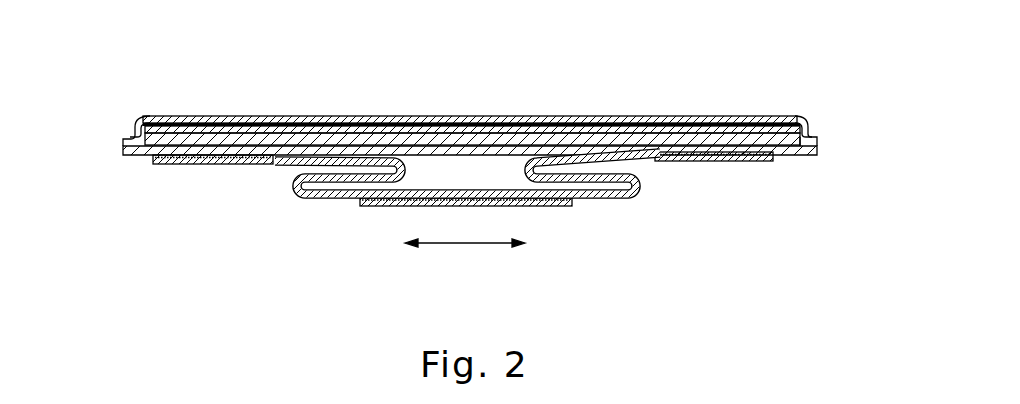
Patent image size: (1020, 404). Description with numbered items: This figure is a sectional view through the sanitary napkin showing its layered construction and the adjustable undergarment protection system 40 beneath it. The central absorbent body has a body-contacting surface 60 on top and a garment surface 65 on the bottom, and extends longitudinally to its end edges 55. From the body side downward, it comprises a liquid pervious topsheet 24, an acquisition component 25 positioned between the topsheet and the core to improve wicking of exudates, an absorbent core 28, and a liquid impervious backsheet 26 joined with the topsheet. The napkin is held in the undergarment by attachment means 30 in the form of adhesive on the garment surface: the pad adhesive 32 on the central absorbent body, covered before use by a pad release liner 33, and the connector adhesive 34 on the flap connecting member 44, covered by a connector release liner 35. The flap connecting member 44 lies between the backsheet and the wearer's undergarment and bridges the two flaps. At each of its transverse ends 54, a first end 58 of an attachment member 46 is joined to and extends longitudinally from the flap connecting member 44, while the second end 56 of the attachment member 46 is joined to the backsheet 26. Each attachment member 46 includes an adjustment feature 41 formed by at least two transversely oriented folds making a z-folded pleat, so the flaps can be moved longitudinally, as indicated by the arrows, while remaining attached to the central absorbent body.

The topsheet 24 is at (655, 114).
The acquisition component 25 is at (767, 116).
The backsheet 26 is at (790, 154).
The absorbent core 28 is at (808, 130).
The attachment means 30 is at (439, 225).
The pad adhesive 32 is at (145, 156).
The pad release liner 33 is at (215, 199).
The connector adhesive 34 is at (535, 251).
The connector release liner 35 is at (550, 208).
The adjustable undergarment protection system 40 is at (449, 242).
The adjustment feature 41 is at (449, 242).
The flap connecting member 44 is at (486, 251).
The attachment member 46 is at (449, 242).
The transverse ends 54 is at (466, 262).
The end edges 55 is at (122, 136).
The second end 56 is at (278, 165).
The first end 58 is at (342, 207).
The body-contacting surface 60 is at (473, 91).
The garment surface 65 is at (130, 157).